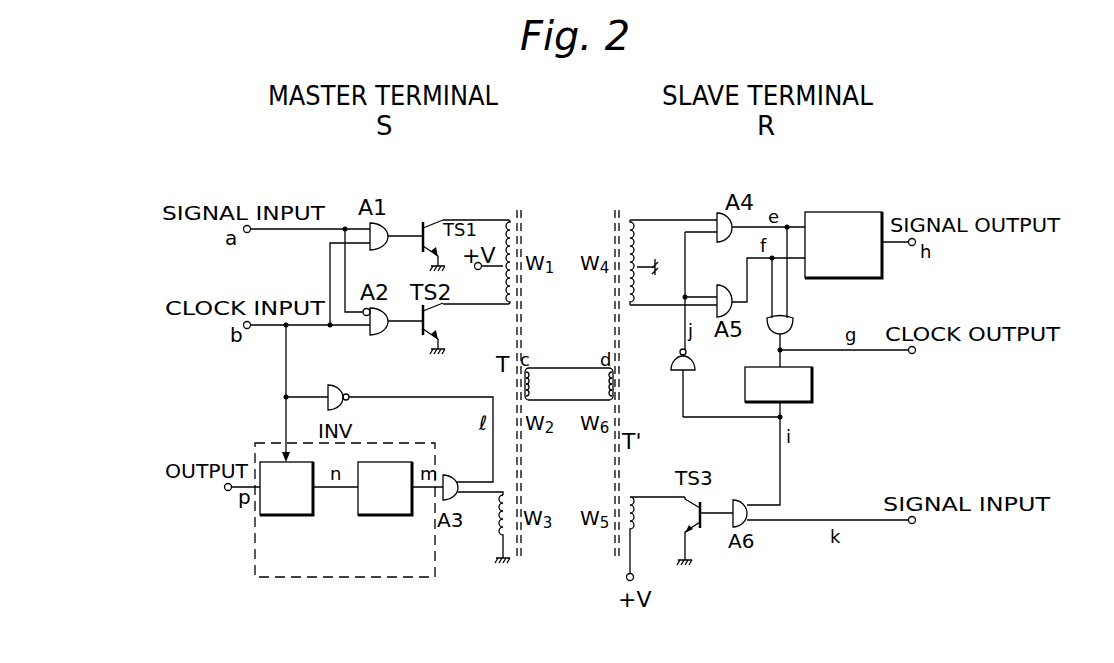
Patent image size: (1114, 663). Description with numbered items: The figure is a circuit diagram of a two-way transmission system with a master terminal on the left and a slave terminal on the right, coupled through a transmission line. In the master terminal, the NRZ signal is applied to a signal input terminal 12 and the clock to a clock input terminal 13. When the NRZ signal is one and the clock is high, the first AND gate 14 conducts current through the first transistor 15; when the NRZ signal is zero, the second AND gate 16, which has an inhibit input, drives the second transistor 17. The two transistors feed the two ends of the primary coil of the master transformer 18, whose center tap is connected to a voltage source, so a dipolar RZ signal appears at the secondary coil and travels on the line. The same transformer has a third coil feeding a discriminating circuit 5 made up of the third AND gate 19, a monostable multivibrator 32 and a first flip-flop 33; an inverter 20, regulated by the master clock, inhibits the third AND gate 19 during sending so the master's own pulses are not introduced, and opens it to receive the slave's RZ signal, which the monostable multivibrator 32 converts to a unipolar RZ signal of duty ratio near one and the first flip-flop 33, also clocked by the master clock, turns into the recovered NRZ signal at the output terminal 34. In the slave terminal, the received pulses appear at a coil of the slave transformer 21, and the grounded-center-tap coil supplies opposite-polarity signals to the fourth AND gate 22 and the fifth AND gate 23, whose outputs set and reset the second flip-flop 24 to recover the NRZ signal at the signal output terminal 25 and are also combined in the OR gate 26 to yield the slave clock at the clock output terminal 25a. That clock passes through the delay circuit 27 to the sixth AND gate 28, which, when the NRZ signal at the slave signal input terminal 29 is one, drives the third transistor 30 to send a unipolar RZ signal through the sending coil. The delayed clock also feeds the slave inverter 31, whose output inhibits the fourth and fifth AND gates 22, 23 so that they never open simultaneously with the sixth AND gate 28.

The discriminating circuit 5 is at (436, 572).
The signal input terminal 12 is at (250, 232).
The clock input terminal 13 is at (250, 328).
The AND gate A1 14 is at (382, 224).
The transistor TS1 15 is at (425, 212).
The AND gate A2 16 is at (380, 335).
The transistor TS2 17 is at (442, 322).
The transformer T 18 is at (522, 366).
The AND gate A3 19 is at (452, 474).
The inverter INV 20 is at (336, 385).
The transformer T' 21 is at (623, 410).
The AND gate A4 22 is at (722, 214).
The AND gate A5 23 is at (721, 286).
The flip-flop circuit FF2 24 is at (845, 278).
The signal output terminal 25 is at (912, 246).
The output terminal 25a is at (912, 354).
The OR gate 26 is at (792, 320).
The delay circuit DL 27 is at (812, 385).
The AND gate A6 28 is at (745, 500).
The signal input terminal 29 is at (914, 524).
The transistor TS3 30 is at (695, 514).
The inverter INV' 31 is at (672, 368).
The monostable multivibrator MM 32 is at (384, 515).
The flip-flop circuit FF1 33 is at (282, 515).
The output terminal 34 is at (229, 490).